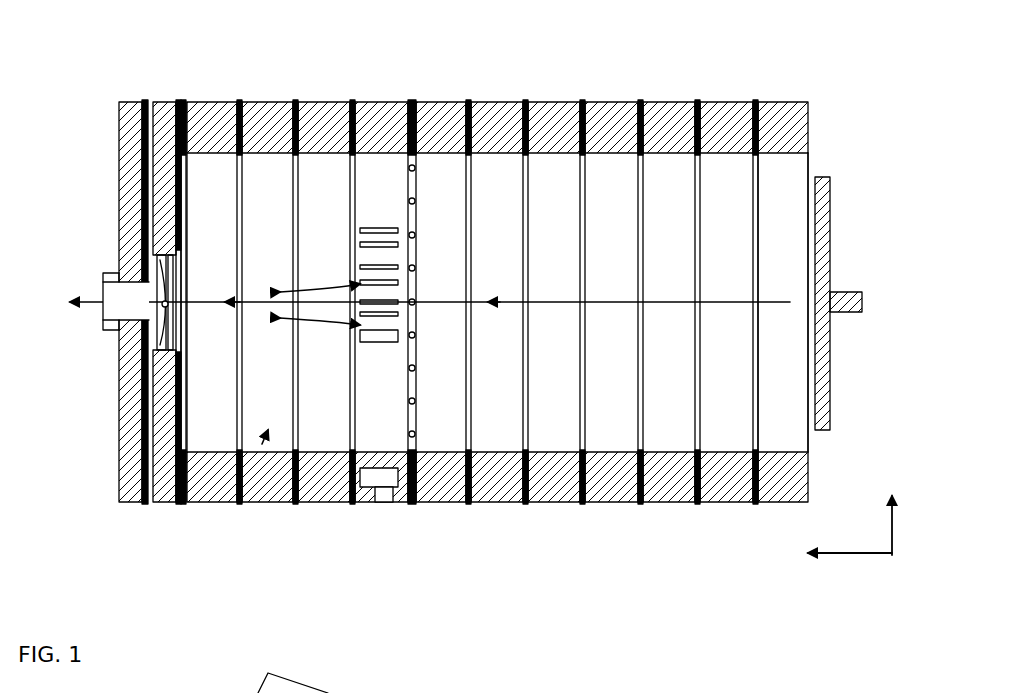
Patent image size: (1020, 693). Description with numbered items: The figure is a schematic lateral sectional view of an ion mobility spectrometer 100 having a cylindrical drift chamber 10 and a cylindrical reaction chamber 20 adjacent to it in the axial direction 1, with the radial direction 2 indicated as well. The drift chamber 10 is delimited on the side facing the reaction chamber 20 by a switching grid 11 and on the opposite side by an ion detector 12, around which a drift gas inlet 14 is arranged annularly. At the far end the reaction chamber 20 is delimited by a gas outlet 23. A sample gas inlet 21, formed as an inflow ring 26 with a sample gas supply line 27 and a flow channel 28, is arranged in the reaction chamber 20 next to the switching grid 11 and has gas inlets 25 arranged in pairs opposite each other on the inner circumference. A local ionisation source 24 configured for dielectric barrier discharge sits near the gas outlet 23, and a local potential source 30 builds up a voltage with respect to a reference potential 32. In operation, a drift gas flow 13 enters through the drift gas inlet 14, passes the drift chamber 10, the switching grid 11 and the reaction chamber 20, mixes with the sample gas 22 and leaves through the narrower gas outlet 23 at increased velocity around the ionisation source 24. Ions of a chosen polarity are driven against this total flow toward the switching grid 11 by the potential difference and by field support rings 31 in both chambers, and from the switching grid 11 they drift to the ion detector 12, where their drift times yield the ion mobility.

The ion mobility spectrometer 100 is at (710, 66).
The drift chamber 10 is at (777, 178).
The field support ring 31 is at (642, 504).
The switching grid 11 is at (416, 372).
The gas inlets 25 is at (418, 335).
The sample gas inlet 21 is at (412, 118).
The inflow ring 26 is at (378, 176).
The sample gas 22 is at (320, 313).
The drift gas flow 13 is at (650, 300).
The reaction chamber 20 is at (263, 445).
The flow channel 28 is at (368, 500).
The sample gas supply line 27 is at (382, 506).
The reference potential 32 is at (143, 102).
The gas outlet 23 is at (118, 311).
The potential source 30 is at (181, 102).
The local ionisation source 24 is at (165, 300).
The ion detector 12 is at (833, 212).
The drift gas inlet 14 is at (800, 156).
The axial direction 1 is at (850, 568).
The radial direction 2 is at (902, 525).